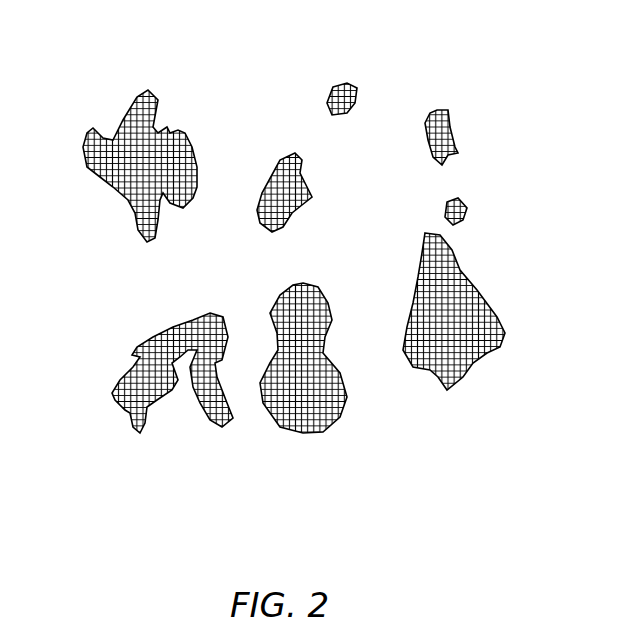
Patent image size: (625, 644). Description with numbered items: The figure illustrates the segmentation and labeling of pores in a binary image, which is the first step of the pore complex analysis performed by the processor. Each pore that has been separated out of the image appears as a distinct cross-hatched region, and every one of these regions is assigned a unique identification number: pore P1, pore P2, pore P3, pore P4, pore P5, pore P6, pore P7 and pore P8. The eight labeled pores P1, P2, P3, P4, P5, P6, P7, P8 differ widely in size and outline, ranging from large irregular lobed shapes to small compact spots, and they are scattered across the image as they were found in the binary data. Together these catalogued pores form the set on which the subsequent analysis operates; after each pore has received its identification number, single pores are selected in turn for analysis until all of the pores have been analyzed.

The pore P1 is at (126, 366).
The pore P2 is at (118, 203).
The pore P3 is at (262, 181).
The pore P4 is at (348, 76).
The pore P5 is at (460, 122).
The pore P6 is at (472, 211).
The pore P7 is at (489, 366).
The pore P8 is at (301, 442).